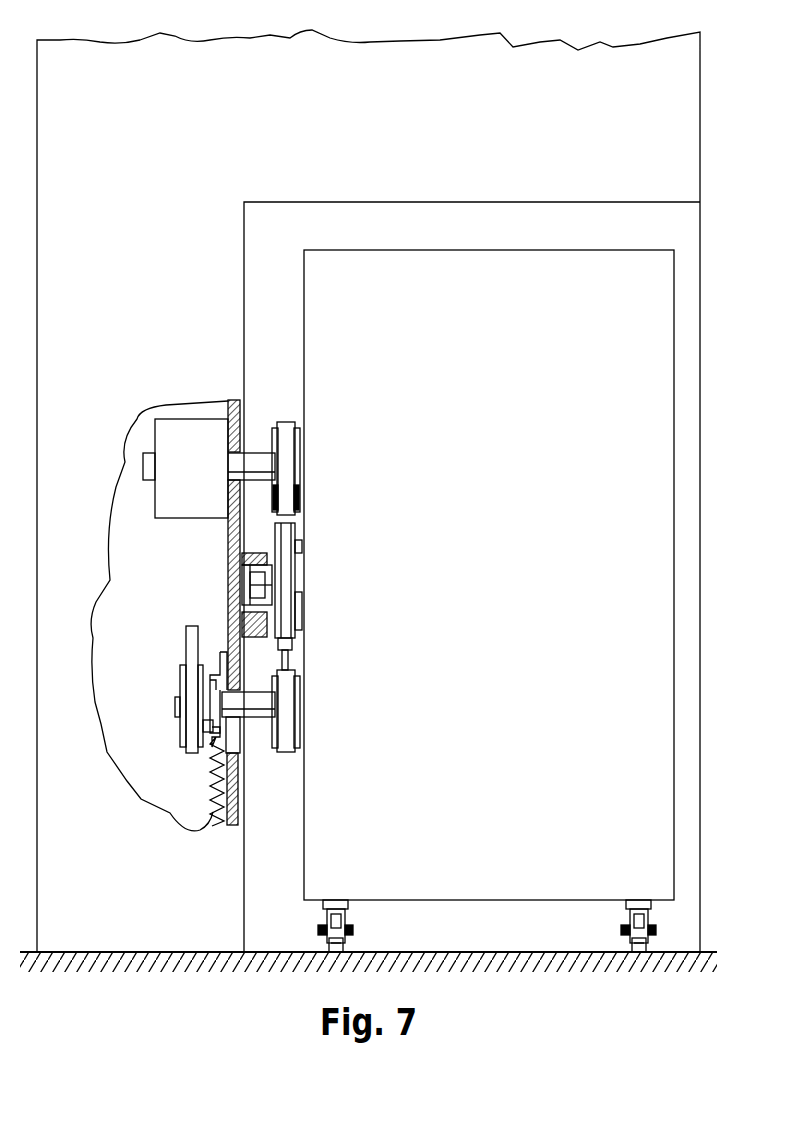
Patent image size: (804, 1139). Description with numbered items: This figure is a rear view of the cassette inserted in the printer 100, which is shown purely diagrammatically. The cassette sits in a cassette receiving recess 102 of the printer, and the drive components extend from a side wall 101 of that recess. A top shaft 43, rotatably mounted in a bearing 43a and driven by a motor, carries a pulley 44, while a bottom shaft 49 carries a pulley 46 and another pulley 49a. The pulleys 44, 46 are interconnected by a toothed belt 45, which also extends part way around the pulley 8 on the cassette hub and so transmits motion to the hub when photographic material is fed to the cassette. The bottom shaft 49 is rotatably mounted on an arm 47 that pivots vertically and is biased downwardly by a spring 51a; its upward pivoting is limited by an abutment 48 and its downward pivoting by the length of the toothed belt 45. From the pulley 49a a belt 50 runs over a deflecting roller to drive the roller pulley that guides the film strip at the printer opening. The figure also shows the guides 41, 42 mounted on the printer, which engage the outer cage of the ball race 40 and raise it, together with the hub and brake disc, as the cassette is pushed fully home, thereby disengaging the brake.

The printer 100 is at (99, 63).
The cassette receiving recess 102 is at (292, 303).
The bearing 43a is at (184, 430).
The top shaft 43 is at (260, 460).
The pulley 44 is at (293, 455).
The pulley 8 is at (287, 532).
The guide 42 is at (267, 560).
The ball race 40 is at (260, 580).
The guide 41 is at (240, 622).
The belt 50 is at (190, 636).
The abutment 48 is at (214, 674).
The toothed belt 45 is at (287, 662).
The pulley 46 is at (293, 705).
The arm 47 is at (213, 726).
The pulley 49a is at (182, 740).
The bottom shaft 49 is at (258, 727).
The spring 51a is at (210, 790).
The side wall 101 is at (221, 828).